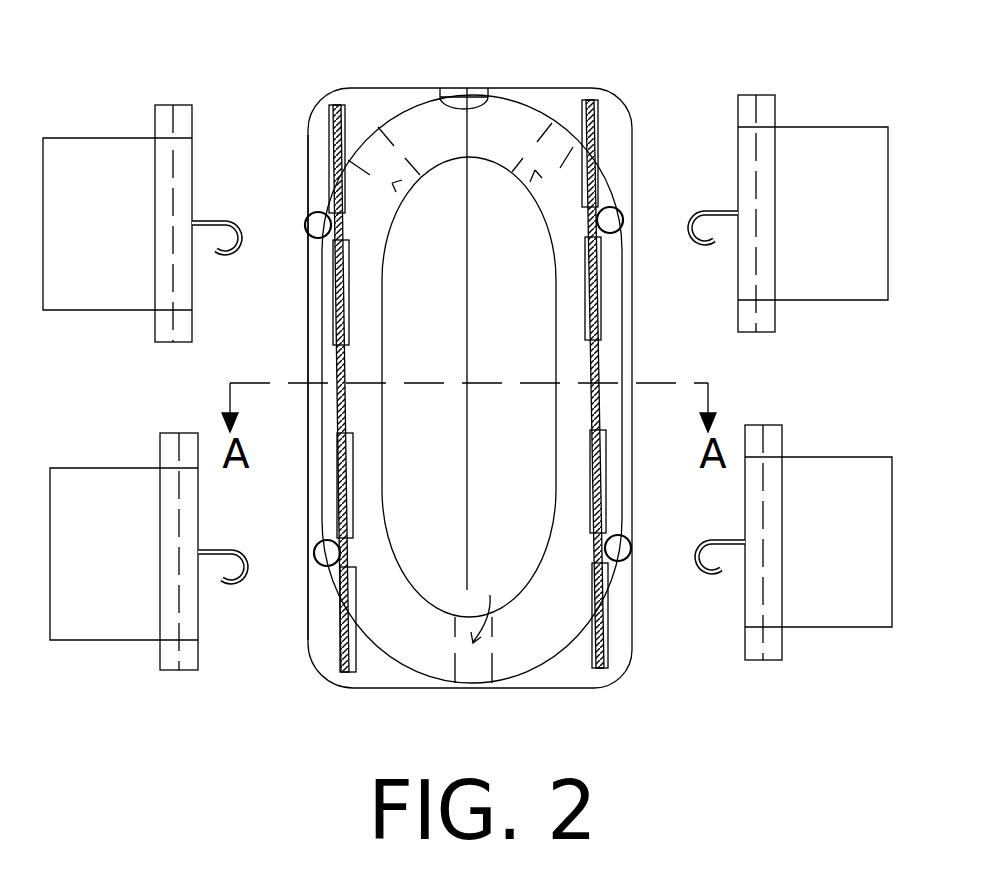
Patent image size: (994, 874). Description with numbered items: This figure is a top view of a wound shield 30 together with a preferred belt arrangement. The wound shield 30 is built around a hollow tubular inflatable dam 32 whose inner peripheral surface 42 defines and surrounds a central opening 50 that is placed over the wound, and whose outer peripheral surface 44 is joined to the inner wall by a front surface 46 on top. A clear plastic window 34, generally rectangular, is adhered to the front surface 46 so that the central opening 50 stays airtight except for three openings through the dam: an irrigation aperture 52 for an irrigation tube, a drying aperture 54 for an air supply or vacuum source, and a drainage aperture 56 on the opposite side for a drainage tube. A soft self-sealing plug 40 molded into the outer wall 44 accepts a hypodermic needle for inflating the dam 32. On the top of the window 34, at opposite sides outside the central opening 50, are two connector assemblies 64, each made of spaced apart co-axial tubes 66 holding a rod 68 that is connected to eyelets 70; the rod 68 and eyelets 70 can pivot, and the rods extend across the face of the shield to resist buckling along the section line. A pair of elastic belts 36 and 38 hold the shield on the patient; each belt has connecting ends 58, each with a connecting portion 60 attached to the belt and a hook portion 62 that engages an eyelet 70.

The wound shield 30 is at (398, 50).
The hollow tubular inflatable dam 32 is at (380, 432).
The clear plastic window 34 is at (495, 322).
The belt 36 is at (96, 228).
The belt 38 is at (108, 562).
The self-sealing plug 40 is at (470, 88).
The inner peripheral surface 42 is at (386, 312).
The outer peripheral surface 44 is at (386, 372).
The front surface 46 is at (367, 356).
The central opening 50 is at (517, 422).
The irrigation aperture 52 is at (394, 185).
The drying aperture 54 is at (536, 172).
The drainage aperture 56 is at (491, 606).
The connecting end 58 is at (467, 355).
The connecting portion 60 is at (162, 123).
The hook portion 62 is at (240, 224).
The connector assembly 64 is at (471, 396).
The co-axial tubes 66 is at (330, 113).
The rod 68 is at (337, 138).
The eyelet 70 is at (306, 216).